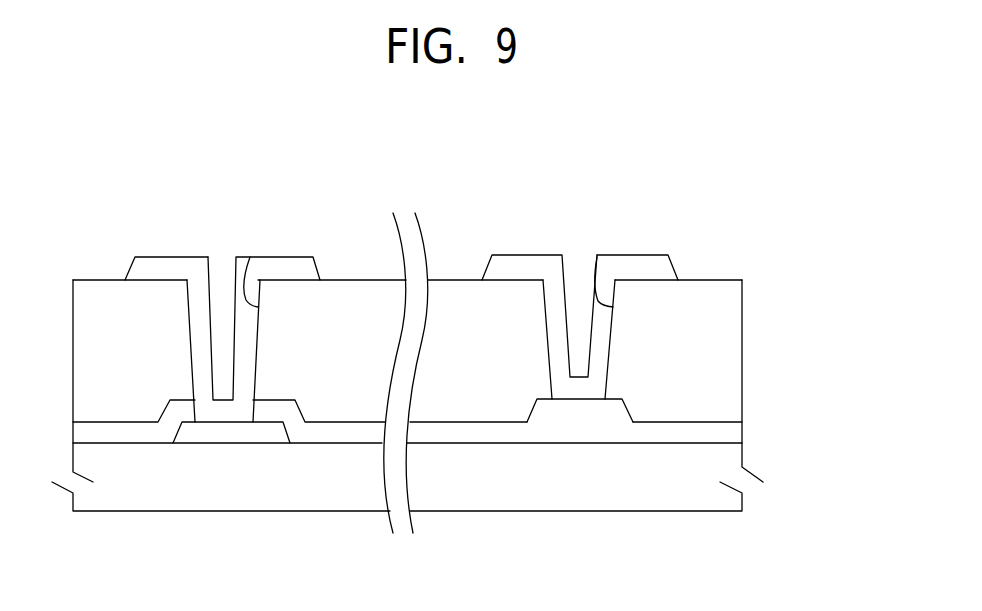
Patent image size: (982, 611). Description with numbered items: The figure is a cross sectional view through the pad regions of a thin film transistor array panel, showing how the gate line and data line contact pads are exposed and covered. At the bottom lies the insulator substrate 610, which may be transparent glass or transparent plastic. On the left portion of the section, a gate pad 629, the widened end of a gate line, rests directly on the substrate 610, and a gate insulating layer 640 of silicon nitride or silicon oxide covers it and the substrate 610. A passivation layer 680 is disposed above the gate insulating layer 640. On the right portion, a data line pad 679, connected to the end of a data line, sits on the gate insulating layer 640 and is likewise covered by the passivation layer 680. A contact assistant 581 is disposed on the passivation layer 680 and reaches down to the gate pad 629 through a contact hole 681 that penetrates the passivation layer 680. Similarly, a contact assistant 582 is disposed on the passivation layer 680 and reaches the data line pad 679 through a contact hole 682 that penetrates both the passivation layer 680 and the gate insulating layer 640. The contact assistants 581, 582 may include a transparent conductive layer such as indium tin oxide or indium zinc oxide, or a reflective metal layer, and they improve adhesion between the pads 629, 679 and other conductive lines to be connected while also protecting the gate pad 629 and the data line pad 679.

The insulator substrate 610 is at (520, 497).
The gate insulating layer 640 is at (115, 443).
The gate pad 629 is at (222, 443).
The data line pad 679 is at (575, 410).
The passivation layer 680 is at (338, 402).
The contact assistant 581 is at (161, 268).
The contact hole 681 is at (251, 254).
The contact assistant 582 is at (513, 263).
The contact hole 682 is at (608, 250).